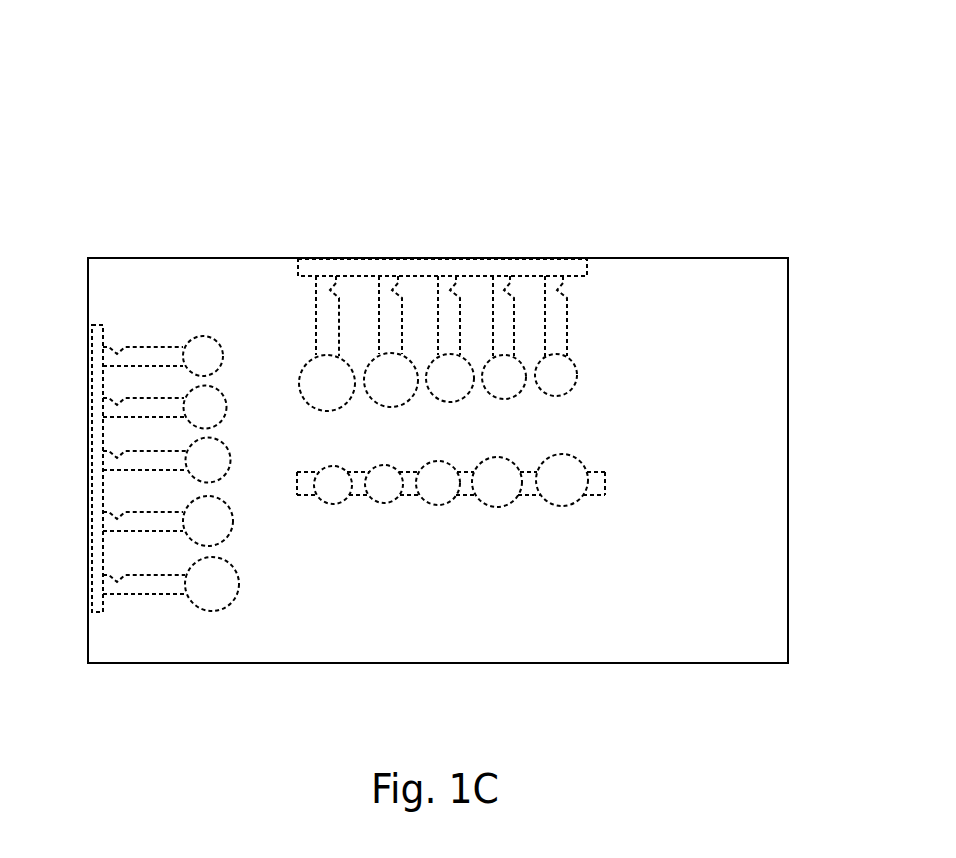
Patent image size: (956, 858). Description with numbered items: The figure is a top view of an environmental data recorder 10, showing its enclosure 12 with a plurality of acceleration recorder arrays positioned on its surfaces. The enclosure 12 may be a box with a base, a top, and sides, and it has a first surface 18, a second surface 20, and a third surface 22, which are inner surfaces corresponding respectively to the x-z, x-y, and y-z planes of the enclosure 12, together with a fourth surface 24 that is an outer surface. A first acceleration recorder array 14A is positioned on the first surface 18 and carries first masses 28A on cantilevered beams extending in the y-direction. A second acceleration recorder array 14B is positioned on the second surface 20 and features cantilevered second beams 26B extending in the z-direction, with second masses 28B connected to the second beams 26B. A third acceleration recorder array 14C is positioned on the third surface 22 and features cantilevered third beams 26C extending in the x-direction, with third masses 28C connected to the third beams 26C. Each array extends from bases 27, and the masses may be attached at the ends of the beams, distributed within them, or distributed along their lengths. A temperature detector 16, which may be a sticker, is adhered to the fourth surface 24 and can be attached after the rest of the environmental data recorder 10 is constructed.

The environmental data recorder 10 is at (200, 75).
The enclosure 12 is at (183, 278).
The first acceleration recorder array 14A is at (451, 591).
The second acceleration recorder array 14B is at (181, 492).
The third acceleration recorder array 14C is at (403, 322).
The temperature detector 16 is at (790, 400).
The first surface 18 is at (636, 574).
The second surface 20 is at (95, 640).
The third surface 22 is at (656, 262).
The fourth surface 24 is at (788, 508).
The second beams 26B is at (160, 608).
The third beams 26C is at (300, 342).
The bases 27 is at (376, 268).
The first masses 28A is at (561, 522).
The second masses 28B is at (262, 590).
The third masses 28C is at (284, 409).